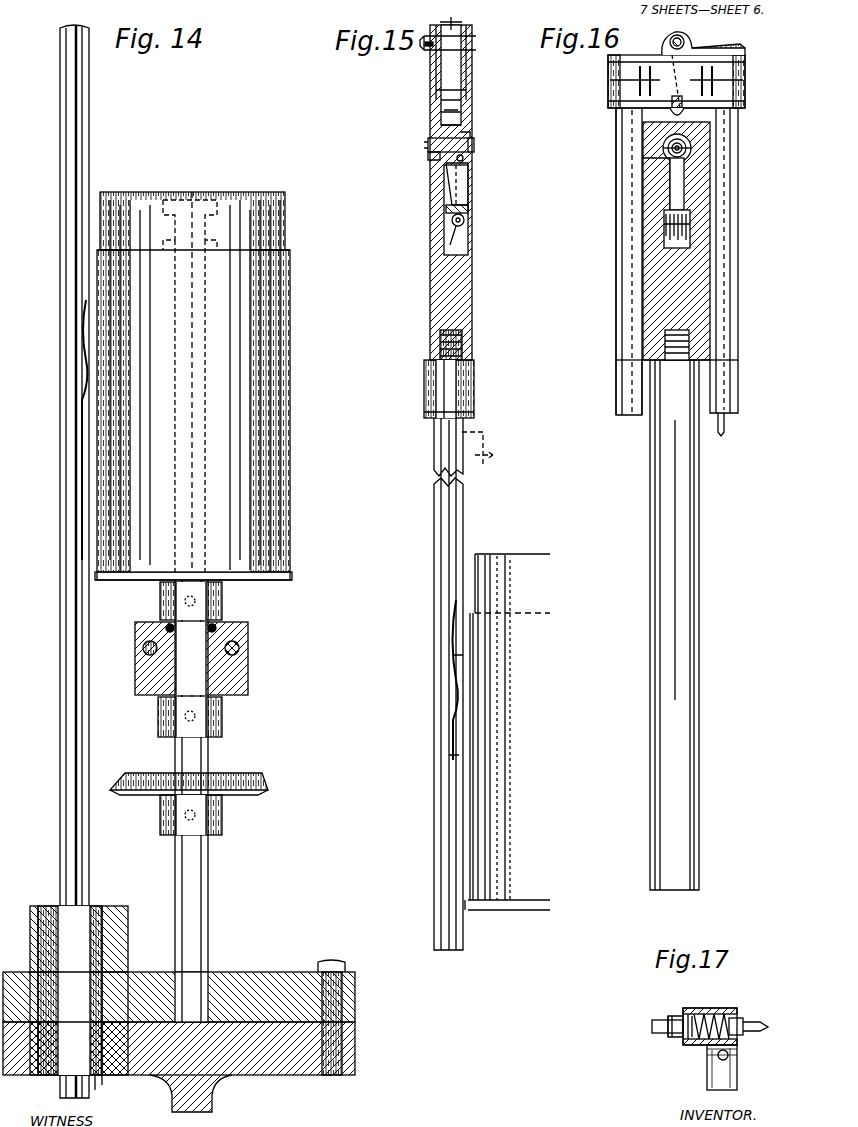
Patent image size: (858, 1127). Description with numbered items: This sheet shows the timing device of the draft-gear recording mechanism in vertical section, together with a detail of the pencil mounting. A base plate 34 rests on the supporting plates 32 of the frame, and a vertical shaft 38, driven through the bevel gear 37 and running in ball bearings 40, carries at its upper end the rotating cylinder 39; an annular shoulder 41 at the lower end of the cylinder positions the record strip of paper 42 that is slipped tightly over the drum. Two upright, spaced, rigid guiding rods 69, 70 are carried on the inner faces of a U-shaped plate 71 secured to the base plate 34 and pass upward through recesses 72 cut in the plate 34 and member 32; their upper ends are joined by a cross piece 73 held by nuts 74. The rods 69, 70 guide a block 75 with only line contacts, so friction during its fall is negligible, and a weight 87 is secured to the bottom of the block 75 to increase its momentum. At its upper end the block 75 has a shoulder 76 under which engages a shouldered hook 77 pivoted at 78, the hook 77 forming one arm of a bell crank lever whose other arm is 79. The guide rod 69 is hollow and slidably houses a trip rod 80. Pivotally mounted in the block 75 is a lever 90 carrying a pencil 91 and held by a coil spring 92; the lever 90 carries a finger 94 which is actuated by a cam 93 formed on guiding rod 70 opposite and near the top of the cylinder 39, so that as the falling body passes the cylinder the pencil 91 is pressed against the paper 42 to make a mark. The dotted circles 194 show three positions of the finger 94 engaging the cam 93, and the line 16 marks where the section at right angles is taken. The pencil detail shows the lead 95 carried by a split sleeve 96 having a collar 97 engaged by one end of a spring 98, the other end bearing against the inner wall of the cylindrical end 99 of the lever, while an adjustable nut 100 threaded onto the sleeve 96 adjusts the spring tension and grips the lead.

In FIG. 15, the section line 16— 16 is at (468, 249).
In FIG. 14, the supporting plates 32 is at (172, 1094).
In FIG. 14, the base plate 34 is at (250, 972).
In FIG. 14, the bevel gear 37 is at (268, 780).
In FIG. 14, the vertical shaft 38 is at (210, 750).
In FIG. 14, the rotating cylinder 39 is at (138, 196).
In FIG. 15, the rotating cylinder 39 is at (494, 556).
In FIG. 14, the ball bearings 40 is at (238, 628).
In FIG. 14, the annular shoulder 41 is at (290, 574).
In FIG. 15, the annular shoulder 41 is at (470, 912).
In FIG. 14, the record strip of paper 42 is at (291, 350).
In FIG. 15, the record strip of paper 42 is at (480, 906).
In FIG. 16, the guiding rod 69 is at (739, 302).
In FIG. 14, the guiding rod 70 is at (60, 88).
In FIG. 15, the guiding rod 70 is at (435, 462).
In FIG. 16, the guiding rod 70 is at (616, 310).
In FIG. 14, the U-shaped plate 71 is at (112, 910).
In FIG. 14, the recesses 72 is at (95, 1076).
In FIG. 15, the cross piece 73 is at (432, 76).
In FIG. 16, the cross piece 73 is at (662, 58).
In FIG. 16, the nuts 74 is at (615, 100).
In FIG. 15, the block 75 is at (472, 312).
In FIG. 16, the shoulder 76 is at (672, 106).
In FIG. 15, the shouldered hook 77 is at (466, 112).
In FIG. 16, the shouldered hook 77 is at (686, 114).
In FIG. 15, the pivot 78 is at (474, 42).
In FIG. 16, the pivot 78 is at (684, 42).
In FIG. 16, the bell crank arm 79 is at (745, 46).
In FIG. 16, the trip rod 80 is at (726, 428).
In FIG. 15, the weight 87 is at (474, 390).
In FIG. 16, the weight 87 is at (702, 686).
In FIG. 15, the lever 90 is at (458, 185).
In FIG. 16, the lever 90 is at (672, 184).
In FIG. 17, the lever 90 is at (707, 1085).
In FIG. 15, the pencil 91 is at (474, 148).
In FIG. 16, the pencil 91 is at (692, 152).
In FIG. 17, the pencil 91 is at (660, 1034).
In FIG. 15, the coil spring 92 is at (466, 228).
In FIG. 16, the coil spring 92 is at (684, 248).
In FIG. 14, the cam 93 is at (82, 330).
In FIG. 15, the cam 93 is at (449, 696).
In FIG. 15, the finger 94 is at (462, 160).
In FIG. 16, the finger 94 is at (645, 162).
In FIG. 17, the finger 94 is at (729, 1056).
In FIG. 17, the lead 95 is at (766, 1030).
In FIG. 15, the split sleeve 96 is at (430, 140).
In FIG. 16, the split sleeve 96 is at (686, 158).
In FIG. 17, the split sleeve 96 is at (742, 1022).
In FIG. 17, the collar 97 is at (738, 1010).
In FIG. 17, the spring 98 is at (716, 1008).
In FIG. 17, the cylindrical end 99 is at (688, 1012).
In FIG. 15, the adjustable nut 100 is at (432, 158).
In FIG. 17, the adjustable nut 100 is at (678, 1040).
In FIG. 15, the dotted circles 194 is at (461, 650).